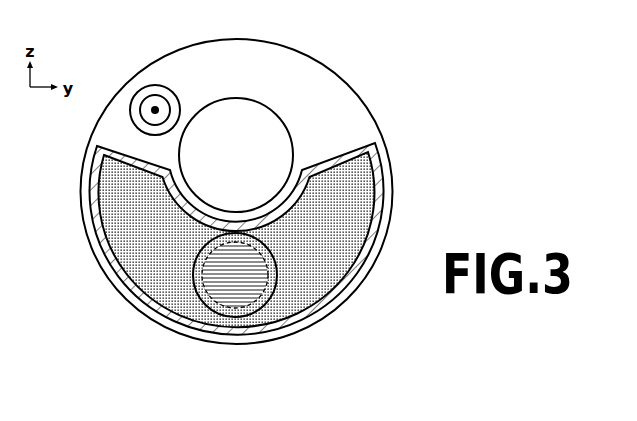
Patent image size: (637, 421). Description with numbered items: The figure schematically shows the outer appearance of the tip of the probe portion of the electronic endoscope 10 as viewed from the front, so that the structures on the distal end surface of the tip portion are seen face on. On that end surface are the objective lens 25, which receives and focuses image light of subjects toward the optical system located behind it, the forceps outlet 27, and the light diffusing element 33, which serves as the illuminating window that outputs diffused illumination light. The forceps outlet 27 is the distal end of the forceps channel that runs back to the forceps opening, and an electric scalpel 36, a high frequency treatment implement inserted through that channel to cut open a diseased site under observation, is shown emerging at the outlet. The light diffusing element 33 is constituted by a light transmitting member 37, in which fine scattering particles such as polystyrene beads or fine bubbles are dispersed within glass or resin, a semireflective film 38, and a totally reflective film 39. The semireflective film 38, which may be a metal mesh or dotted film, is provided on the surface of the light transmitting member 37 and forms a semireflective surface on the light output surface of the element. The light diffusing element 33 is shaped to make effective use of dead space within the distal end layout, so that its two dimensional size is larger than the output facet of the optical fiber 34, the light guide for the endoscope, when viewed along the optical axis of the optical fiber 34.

The electronic endoscope 10 is at (334, 72).
The objective lens 25 is at (276, 114).
The forceps outlet 27 is at (131, 110).
The electric scalpel 36 is at (157, 93).
The light diffusing element 33 is at (341, 150).
The totally reflective film 39 is at (376, 162).
The light transmitting member 37 is at (352, 210).
The semireflective film 38 is at (238, 318).
The optical fiber 34 is at (288, 318).